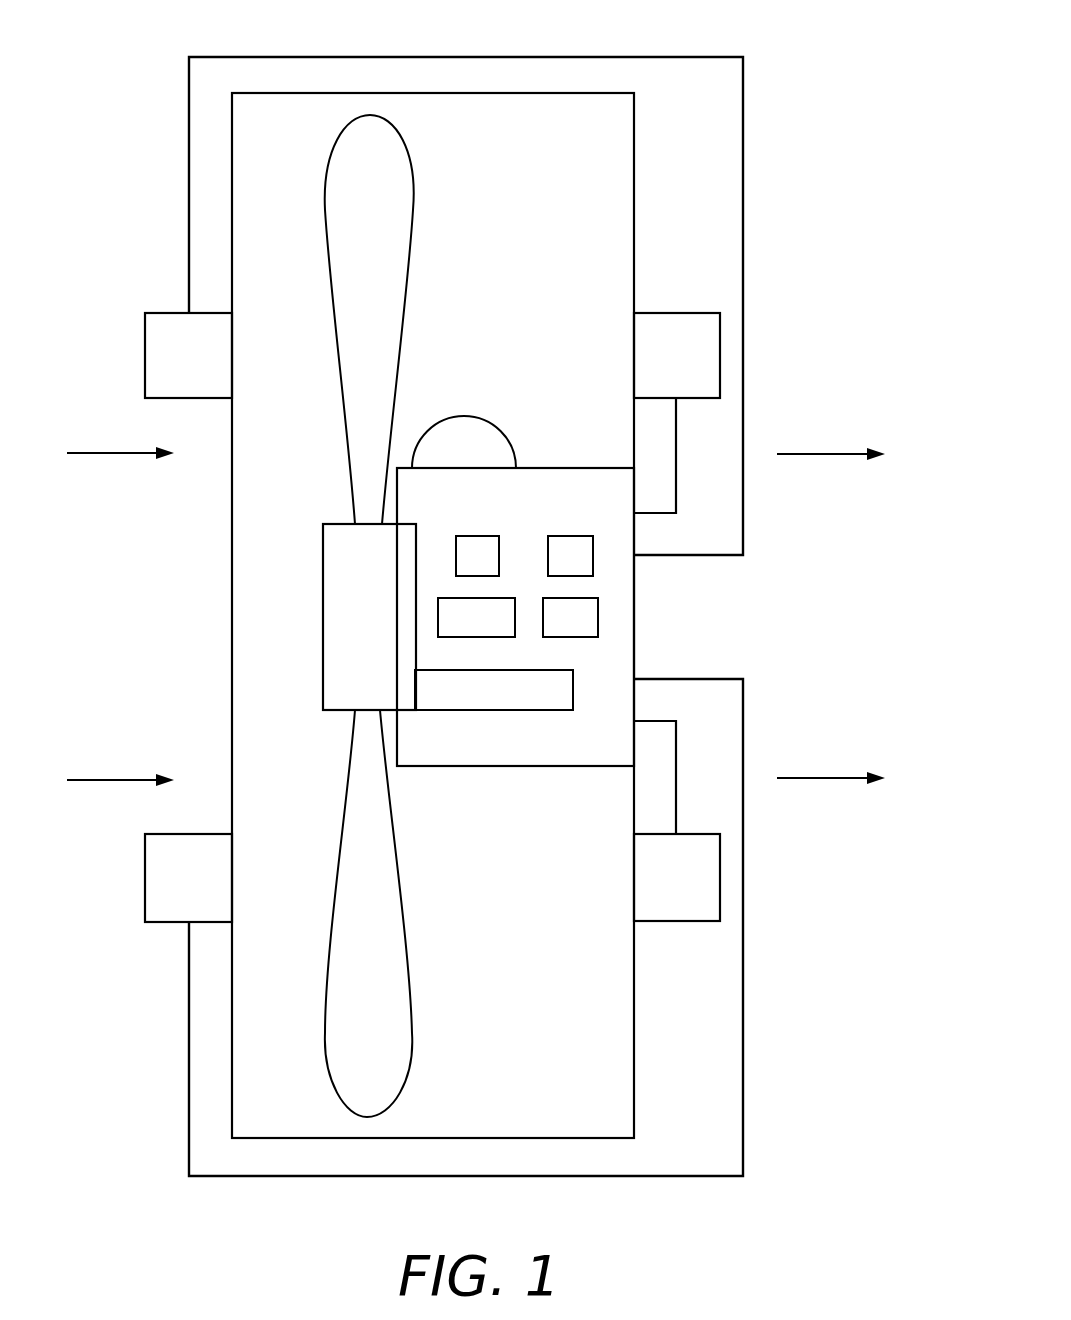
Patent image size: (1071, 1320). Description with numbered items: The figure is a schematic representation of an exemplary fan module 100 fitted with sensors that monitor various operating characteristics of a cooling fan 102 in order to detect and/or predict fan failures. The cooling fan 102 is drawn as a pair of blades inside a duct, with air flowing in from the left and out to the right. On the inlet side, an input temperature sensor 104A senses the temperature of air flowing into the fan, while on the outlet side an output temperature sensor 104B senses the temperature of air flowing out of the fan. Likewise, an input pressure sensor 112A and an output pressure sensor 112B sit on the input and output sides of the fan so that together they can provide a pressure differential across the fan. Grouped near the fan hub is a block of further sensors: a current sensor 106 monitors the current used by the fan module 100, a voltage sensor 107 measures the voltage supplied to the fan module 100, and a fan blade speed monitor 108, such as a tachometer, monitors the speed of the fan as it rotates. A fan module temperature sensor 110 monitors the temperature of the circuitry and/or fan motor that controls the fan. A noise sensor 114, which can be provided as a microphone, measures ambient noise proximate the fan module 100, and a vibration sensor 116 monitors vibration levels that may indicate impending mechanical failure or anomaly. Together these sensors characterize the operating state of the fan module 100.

The fan module 100 is at (803, 77).
The cooling fan 102 is at (401, 154).
The input temperature sensor 104A is at (145, 878).
The output temperature sensor 104B is at (676, 921).
The current sensor 106 is at (477, 536).
The voltage sensor 107 is at (571, 536).
The fan blade speed monitor 108 is at (495, 637).
The fan module temperature sensor 110 is at (598, 618).
The input pressure sensor 112A is at (145, 355).
The output pressure sensor 112B is at (676, 313).
The noise sensor 114 is at (484, 418).
The vibration sensor 116 is at (552, 710).